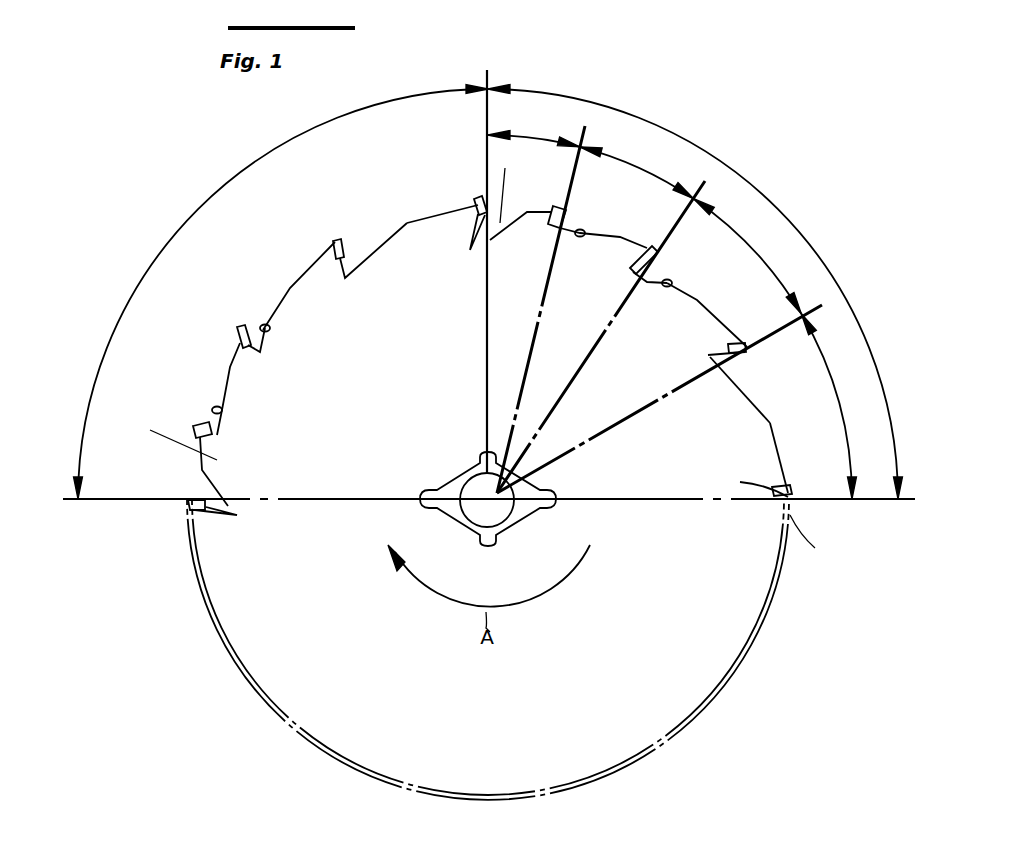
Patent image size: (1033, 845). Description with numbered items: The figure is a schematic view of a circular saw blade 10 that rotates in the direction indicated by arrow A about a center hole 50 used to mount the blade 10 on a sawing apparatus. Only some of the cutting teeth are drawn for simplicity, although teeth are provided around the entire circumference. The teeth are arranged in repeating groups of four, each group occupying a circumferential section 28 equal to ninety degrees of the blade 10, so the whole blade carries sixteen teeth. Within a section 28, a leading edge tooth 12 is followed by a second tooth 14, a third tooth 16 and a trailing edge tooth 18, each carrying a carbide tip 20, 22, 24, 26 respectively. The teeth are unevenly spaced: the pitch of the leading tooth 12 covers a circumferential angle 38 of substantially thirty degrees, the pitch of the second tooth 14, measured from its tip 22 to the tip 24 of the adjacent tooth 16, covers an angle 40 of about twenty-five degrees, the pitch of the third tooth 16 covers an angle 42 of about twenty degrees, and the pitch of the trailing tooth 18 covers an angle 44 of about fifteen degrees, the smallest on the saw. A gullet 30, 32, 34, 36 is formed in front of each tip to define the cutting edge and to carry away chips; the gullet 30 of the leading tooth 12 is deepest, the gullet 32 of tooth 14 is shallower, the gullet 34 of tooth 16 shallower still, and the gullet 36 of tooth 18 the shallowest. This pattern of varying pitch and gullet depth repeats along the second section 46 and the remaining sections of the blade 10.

The circular saw blade 10 is at (275, 590).
The leading edge tooth 12 is at (433, 228).
The second tooth 14 is at (313, 282).
The third tooth 16 is at (243, 362).
The trailing edge tooth 18 is at (535, 220).
The carbide tip 20 is at (482, 205).
The carbide tip 22 is at (338, 240).
The carbide tip 24 is at (240, 327).
The carbide tip 26 is at (198, 425).
The circumferential section 28 is at (760, 188).
The gullet 30 is at (667, 356).
The gullet 32 is at (368, 257).
The gullet 34 is at (270, 329).
The gullet 36 is at (222, 409).
The circumferential angle 38 is at (845, 430).
The pitch angle 40 is at (768, 262).
The pitch angle 42 is at (626, 162).
The pitch angle 44 is at (520, 133).
The second section 46 is at (188, 218).
The center hole 50 is at (470, 518).